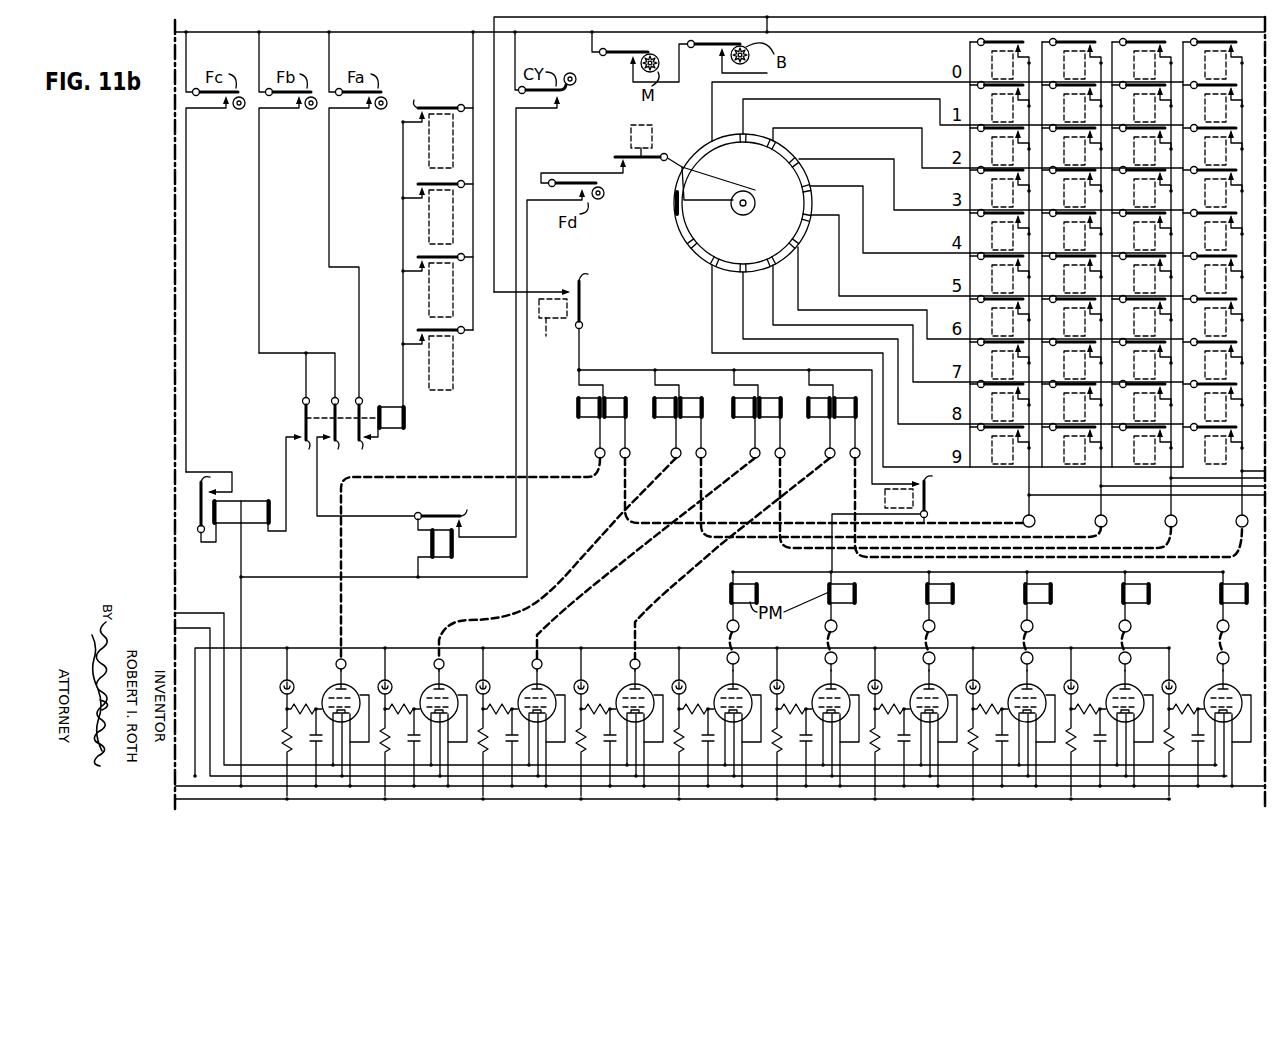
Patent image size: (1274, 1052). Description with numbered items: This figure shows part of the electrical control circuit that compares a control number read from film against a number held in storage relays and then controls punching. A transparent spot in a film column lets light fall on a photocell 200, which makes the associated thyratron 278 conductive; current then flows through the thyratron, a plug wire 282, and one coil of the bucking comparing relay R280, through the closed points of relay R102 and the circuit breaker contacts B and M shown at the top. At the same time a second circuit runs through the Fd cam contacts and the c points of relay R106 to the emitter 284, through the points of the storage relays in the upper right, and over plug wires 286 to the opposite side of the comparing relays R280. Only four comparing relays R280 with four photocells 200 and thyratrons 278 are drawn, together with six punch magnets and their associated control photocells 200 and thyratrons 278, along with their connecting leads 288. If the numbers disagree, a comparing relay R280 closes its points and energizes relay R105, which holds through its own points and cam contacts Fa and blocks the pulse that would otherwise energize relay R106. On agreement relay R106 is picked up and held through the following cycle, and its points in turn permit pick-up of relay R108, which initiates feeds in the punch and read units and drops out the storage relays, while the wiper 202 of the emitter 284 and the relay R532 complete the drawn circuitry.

The photocell 200 is at (292, 684).
The dial pointer 202 is at (726, 198).
The thyratron 278 is at (355, 696).
The plug wire 282 is at (352, 613).
The emitter 284 is at (677, 228).
The plug wires 286 is at (990, 516).
The leads from PM relays to trigger tubes 288 is at (729, 644).
The relay R102 is at (541, 309).
The relay R105 is at (400, 430).
The relay R106 is at (630, 140).
The relay R108 is at (430, 545).
The comparing relay R280 is at (592, 424).
The relay R532 is at (428, 136).